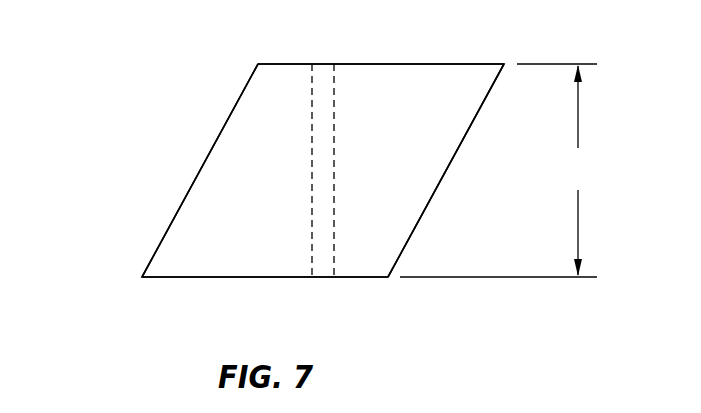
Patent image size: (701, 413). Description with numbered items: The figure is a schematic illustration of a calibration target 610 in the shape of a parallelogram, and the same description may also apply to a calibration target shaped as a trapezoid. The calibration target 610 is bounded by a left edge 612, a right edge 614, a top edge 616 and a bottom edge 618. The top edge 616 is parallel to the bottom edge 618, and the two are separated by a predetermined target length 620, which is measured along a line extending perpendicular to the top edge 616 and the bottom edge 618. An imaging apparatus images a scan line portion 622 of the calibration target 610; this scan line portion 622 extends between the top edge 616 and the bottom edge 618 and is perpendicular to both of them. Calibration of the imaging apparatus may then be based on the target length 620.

The calibration target 610 is at (290, 164).
The left edge 612 is at (167, 232).
The right edge 614 is at (413, 232).
The top edge 616 is at (383, 64).
The bottom edge 618 is at (262, 277).
The target length 620 is at (498, 170).
The scan line portion 622 is at (323, 72).